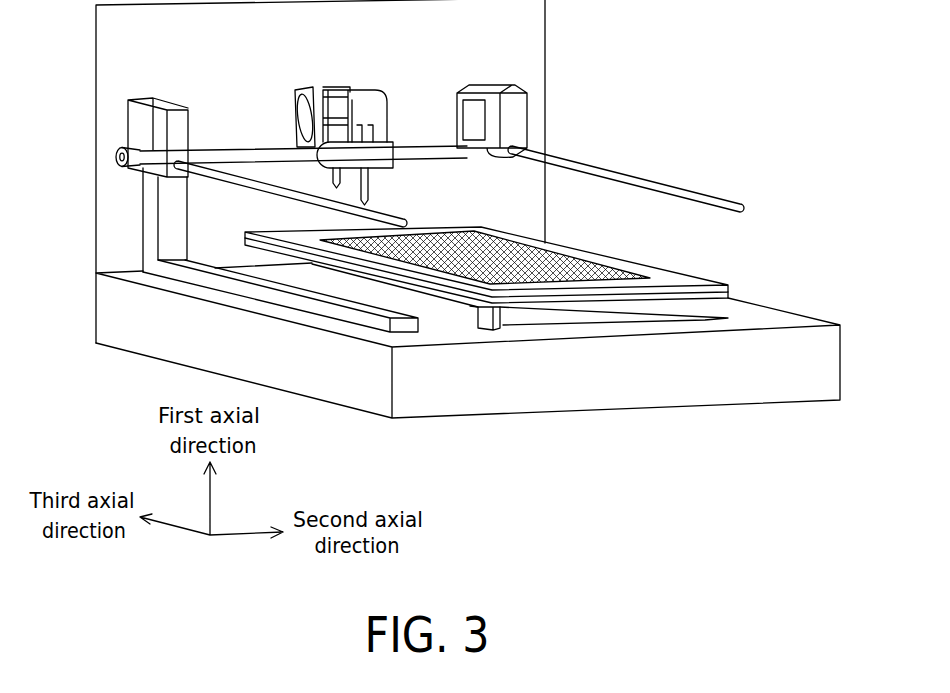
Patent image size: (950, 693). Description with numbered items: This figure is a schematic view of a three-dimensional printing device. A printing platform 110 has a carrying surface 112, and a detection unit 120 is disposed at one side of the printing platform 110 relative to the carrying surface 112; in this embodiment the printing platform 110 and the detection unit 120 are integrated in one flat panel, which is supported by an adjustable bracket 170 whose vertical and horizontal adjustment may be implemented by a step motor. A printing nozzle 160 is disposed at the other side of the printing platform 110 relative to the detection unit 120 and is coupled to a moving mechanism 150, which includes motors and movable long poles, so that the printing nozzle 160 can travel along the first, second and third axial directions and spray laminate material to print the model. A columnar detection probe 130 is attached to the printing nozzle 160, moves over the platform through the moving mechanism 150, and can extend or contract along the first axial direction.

The printing platform 110 is at (731, 288).
The carrying surface 112 is at (607, 256).
The detection unit 120 is at (731, 297).
The detection probe 130 is at (368, 191).
The moving mechanism 150 is at (378, 107).
The printing nozzle 160 is at (333, 177).
The adjustable bracket 170 is at (500, 322).